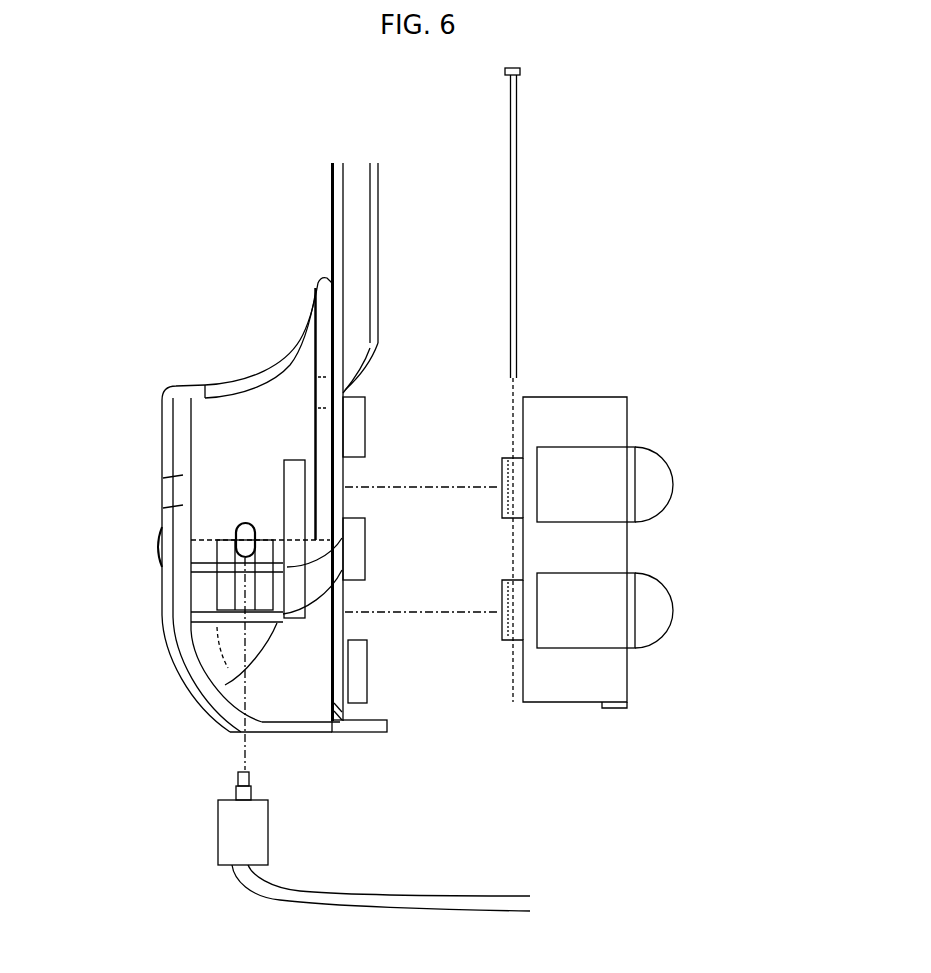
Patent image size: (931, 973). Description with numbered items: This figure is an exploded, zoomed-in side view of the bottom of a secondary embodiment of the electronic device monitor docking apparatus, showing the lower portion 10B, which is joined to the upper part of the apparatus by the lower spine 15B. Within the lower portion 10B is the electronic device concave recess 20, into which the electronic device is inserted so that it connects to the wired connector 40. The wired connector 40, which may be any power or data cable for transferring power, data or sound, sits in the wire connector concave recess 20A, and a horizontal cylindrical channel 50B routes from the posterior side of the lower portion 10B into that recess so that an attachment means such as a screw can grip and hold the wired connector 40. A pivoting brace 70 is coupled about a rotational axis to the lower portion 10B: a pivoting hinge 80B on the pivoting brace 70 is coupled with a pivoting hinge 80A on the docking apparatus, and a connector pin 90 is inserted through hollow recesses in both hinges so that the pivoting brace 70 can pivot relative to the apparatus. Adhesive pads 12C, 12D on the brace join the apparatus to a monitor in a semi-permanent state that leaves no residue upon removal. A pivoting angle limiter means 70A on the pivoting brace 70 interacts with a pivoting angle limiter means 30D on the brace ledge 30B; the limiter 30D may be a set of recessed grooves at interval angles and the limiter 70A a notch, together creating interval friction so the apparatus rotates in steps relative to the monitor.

The lower portion 10B is at (332, 190).
The lower spine 15B is at (354, 175).
The electronic device concave recess 20 is at (248, 422).
The wire connector concave recess 20A is at (228, 590).
The horizontal cylindrical channel 50B is at (228, 683).
The wired connector 40 is at (237, 830).
The brace ledge 30B is at (350, 740).
The pivoting angle limiter means 30D is at (383, 724).
The pivoting hinge 80A is at (355, 735).
The pivoting hinge 80B is at (510, 685).
The pivoting brace 70 is at (576, 685).
The pivoting angle limiter means 70A is at (613, 705).
The adhesive pad 12C is at (603, 458).
The adhesive pad 12D is at (600, 590).
The connector pin 90 is at (512, 105).